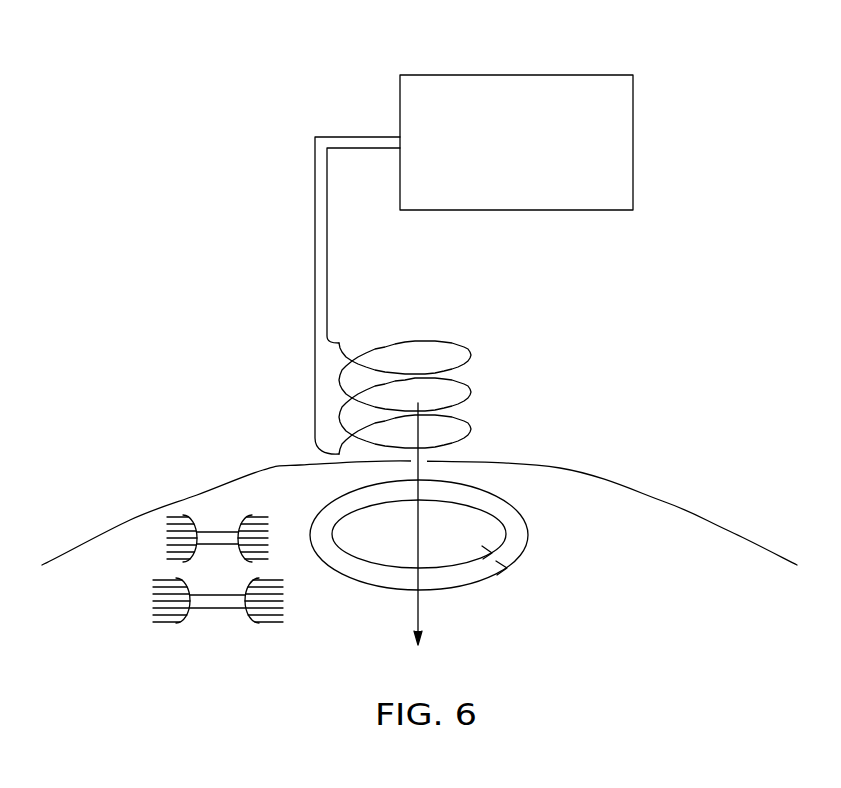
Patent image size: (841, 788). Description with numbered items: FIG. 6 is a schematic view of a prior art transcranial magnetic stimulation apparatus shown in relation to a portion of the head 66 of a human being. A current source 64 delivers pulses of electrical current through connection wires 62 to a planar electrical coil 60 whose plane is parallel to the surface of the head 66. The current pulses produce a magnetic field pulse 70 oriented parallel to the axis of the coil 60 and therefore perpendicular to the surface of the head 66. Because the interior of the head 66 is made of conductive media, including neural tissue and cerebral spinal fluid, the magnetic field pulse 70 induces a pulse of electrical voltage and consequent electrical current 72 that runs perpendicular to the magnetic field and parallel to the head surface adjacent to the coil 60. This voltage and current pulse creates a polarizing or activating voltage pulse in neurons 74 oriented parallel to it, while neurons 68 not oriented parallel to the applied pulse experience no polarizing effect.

The planar electrical coil 60 is at (472, 355).
The connection wires 62 is at (314, 222).
The current source 64 is at (633, 138).
The head 66 is at (665, 500).
The magnetic particle 68 is at (153, 614).
The magnetic field pulse 70 is at (418, 613).
The electrical current 72 is at (528, 540).
The neurons 74 is at (217, 533).